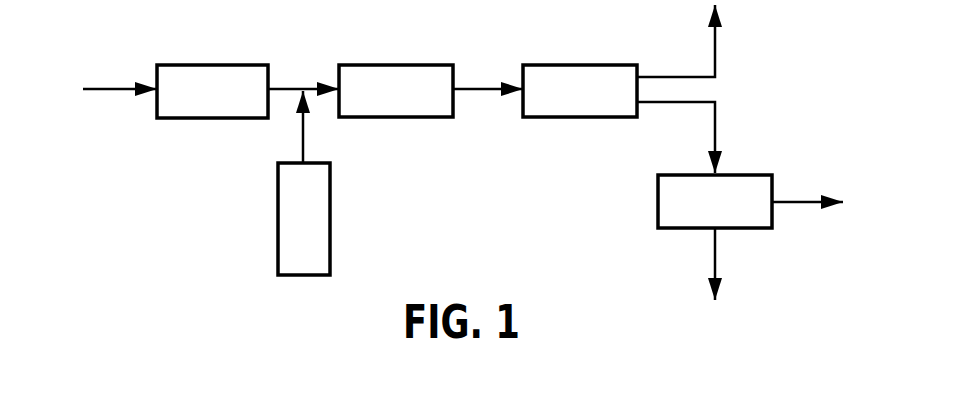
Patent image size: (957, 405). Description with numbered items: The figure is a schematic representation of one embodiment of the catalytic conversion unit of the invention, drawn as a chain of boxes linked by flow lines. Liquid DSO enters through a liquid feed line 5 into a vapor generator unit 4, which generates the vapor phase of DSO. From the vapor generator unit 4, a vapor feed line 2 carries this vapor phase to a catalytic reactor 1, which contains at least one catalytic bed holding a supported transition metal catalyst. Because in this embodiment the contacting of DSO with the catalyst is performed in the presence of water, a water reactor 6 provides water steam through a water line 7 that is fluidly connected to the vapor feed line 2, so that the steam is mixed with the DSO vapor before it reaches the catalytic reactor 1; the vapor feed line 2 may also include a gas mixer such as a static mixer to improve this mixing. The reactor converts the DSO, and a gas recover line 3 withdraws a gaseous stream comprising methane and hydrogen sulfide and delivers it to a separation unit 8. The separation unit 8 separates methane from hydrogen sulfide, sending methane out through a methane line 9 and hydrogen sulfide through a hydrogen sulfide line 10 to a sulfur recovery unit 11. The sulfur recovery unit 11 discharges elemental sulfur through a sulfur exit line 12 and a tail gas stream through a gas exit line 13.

The catalytic reactor 1 is at (380, 63).
The vapor feed line 2 is at (288, 89).
The gas recover line 3 is at (480, 88).
The vapor generator unit 4 is at (193, 63).
The liquid feed line 5 is at (113, 89).
The water reactor 6 is at (278, 237).
The water line 7 is at (300, 135).
The separation unit 8 is at (562, 63).
The methane line 9 is at (717, 50).
The hydrogen sulfide line 10 is at (717, 132).
The sulfur recovery unit 11 is at (658, 208).
The sulfur exit line 12 is at (715, 255).
The gas exit line 13 is at (798, 200).